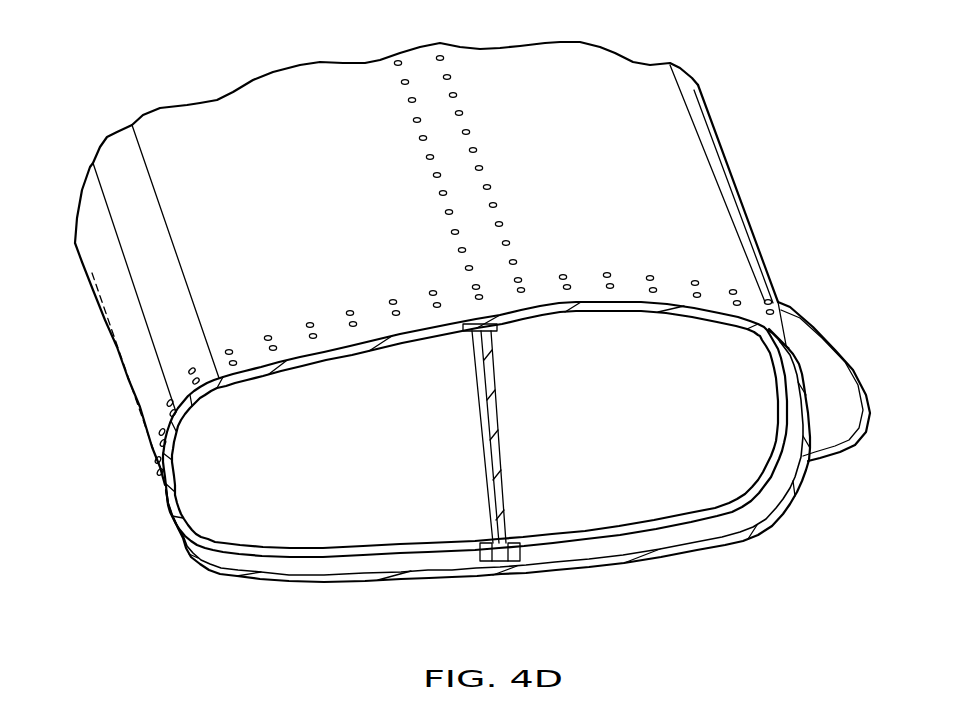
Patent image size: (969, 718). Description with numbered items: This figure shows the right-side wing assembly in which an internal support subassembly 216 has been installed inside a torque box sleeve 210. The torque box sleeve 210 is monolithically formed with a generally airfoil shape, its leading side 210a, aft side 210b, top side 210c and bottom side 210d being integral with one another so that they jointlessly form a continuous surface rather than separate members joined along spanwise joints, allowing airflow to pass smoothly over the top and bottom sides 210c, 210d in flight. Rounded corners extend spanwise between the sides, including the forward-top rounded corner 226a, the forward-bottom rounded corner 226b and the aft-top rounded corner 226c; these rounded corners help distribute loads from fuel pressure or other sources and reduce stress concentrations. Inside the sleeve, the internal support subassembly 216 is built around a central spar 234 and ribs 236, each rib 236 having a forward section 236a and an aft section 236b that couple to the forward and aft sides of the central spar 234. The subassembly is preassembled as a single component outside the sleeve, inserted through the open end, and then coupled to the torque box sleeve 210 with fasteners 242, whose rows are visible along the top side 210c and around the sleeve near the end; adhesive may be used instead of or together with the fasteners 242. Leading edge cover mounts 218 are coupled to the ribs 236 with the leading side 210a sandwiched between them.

The torque box sleeve 210 is at (218, 113).
The leading side 210a is at (812, 415).
The aft side 210b is at (147, 430).
The top side 210c is at (328, 78).
The bottom side 210d is at (302, 585).
The internal support subassembly 216 is at (502, 476).
The leading edge cover mounts 218 is at (853, 370).
The forward-top rounded corner 226a is at (783, 342).
The forward-bottom rounded corner 226b is at (788, 505).
The aft-top rounded corner 226c is at (197, 393).
The central spar 234 is at (493, 388).
The ribs 236 is at (443, 530).
The forward section 236a is at (603, 517).
The aft section 236b is at (424, 564).
The fasteners 242 is at (480, 167).